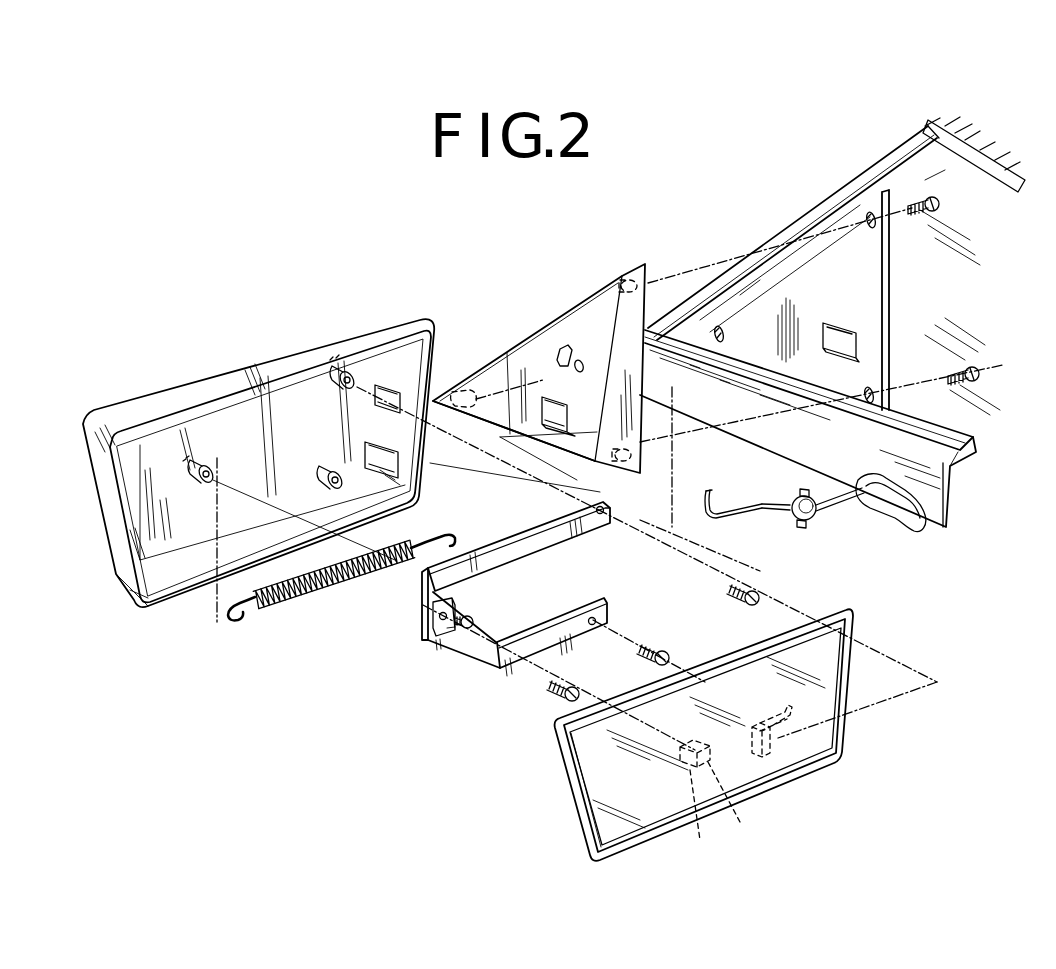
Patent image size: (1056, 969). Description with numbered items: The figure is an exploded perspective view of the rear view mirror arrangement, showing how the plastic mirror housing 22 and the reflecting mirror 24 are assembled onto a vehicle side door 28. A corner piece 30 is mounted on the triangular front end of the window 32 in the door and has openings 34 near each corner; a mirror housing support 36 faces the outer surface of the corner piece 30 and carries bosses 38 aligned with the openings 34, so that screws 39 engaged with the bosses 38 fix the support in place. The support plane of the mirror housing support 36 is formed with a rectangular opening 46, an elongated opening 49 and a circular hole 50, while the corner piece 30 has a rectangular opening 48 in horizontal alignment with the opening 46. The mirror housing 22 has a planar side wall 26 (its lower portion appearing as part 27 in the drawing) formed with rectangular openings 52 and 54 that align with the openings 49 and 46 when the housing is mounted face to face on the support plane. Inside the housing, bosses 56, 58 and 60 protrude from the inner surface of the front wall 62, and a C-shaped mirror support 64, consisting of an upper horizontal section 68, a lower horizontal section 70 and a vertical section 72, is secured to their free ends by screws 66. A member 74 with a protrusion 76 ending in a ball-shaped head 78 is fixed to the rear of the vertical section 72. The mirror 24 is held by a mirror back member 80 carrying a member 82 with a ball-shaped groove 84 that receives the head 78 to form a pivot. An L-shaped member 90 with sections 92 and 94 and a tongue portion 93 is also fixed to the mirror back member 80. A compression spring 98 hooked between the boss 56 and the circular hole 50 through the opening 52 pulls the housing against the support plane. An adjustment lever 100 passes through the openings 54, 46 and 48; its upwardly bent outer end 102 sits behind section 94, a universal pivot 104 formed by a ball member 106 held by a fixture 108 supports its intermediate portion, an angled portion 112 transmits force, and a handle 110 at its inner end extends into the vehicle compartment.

The mirror housing 22 is at (240, 358).
The reflecting mirror 24 is at (705, 738).
The side wall 26 is at (437, 345).
The housing bottom wall 27 is at (176, 582).
The vehicle side door 28 is at (948, 492).
The corner piece 30 is at (880, 268).
The window 32 is at (1005, 168).
The openings 34 is at (865, 215).
The mirror housing support 36 is at (575, 308).
The bosses 38 is at (652, 285).
The screws 39 is at (924, 204).
The rectangular opening 46 is at (563, 415).
The rectangular opening 48 is at (856, 341).
The elongated opening 49 is at (562, 348).
The circular hole 50 is at (575, 370).
The rectangular opening 52 is at (381, 389).
The rectangular opening 54 is at (398, 476).
The boss 56 is at (207, 460).
The boss 58 is at (319, 486).
The boss 60 is at (340, 390).
The front wall 62 is at (175, 438).
The mirror support 64 is at (492, 599).
The screws 66 is at (754, 590).
The upper horizontal section 68 is at (536, 537).
The lower horizontal section 70 is at (540, 642).
The vertical section 72 is at (422, 606).
The member 74 is at (445, 632).
The protrusion 76 is at (470, 618).
The ball-shaped head 78 is at (458, 638).
The mirror back member 80 is at (566, 760).
The member 82 is at (695, 803).
The ball-shaped groove 84 is at (736, 806).
The member 90 is at (786, 746).
The section 92 is at (754, 746).
The tongue portion 93 is at (838, 692).
The section 94 is at (778, 745).
The compression spring 98 is at (298, 598).
The adjustment lever 100 is at (816, 492).
The outer end 102 is at (713, 492).
The universal pivot 104 is at (816, 518).
The ball member 106 is at (792, 515).
The fixture 108 is at (815, 492).
The handle 110 is at (912, 532).
The angled portion 112 is at (764, 500).